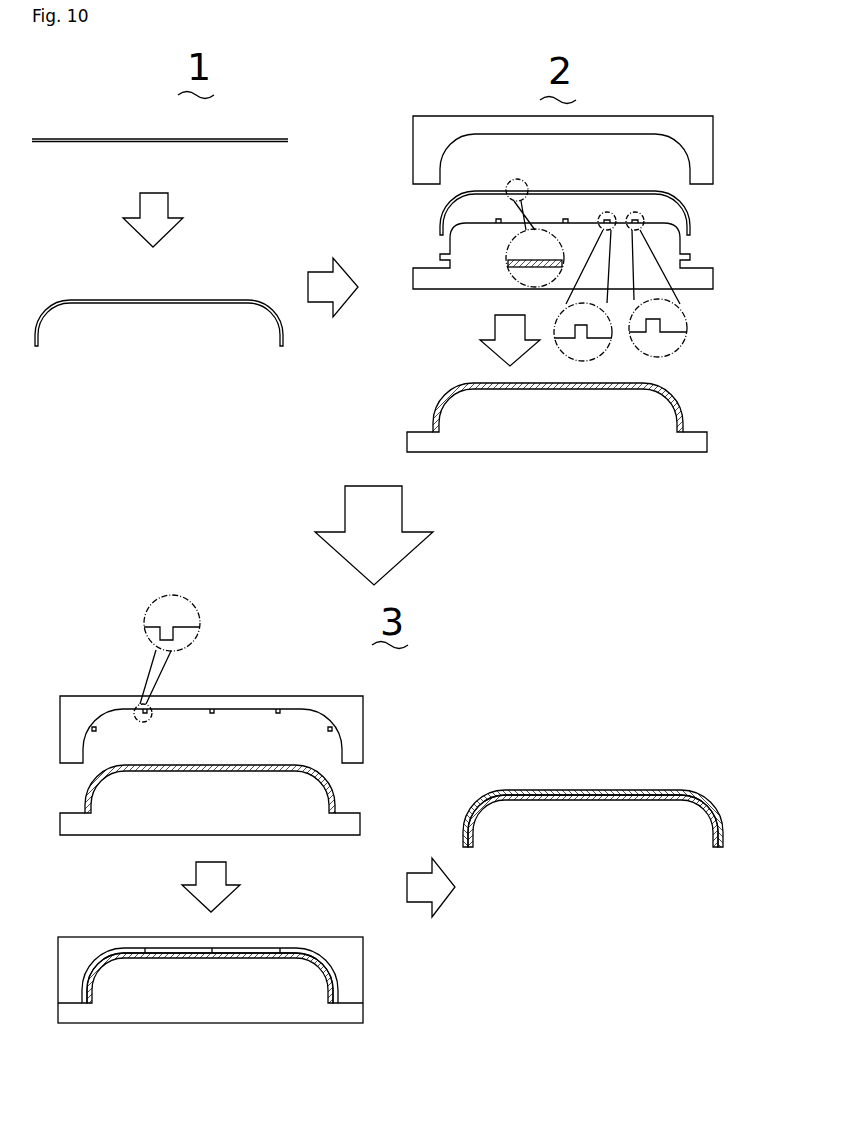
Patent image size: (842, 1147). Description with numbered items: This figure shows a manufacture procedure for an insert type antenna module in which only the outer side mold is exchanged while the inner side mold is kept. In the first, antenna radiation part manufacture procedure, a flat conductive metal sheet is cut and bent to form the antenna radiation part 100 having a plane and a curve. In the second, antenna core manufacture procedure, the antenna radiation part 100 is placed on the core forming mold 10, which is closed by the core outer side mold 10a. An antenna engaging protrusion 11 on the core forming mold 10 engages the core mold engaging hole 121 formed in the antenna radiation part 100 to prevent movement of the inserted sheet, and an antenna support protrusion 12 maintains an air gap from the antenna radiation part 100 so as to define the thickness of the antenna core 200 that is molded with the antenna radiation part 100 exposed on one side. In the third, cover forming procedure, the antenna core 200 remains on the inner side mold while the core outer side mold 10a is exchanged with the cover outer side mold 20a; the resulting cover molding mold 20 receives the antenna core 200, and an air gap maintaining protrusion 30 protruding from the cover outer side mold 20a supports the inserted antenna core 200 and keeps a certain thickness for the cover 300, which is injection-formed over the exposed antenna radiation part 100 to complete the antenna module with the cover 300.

The antenna radiation part 100 is at (254, 283).
The core outer side mold 10a is at (421, 127).
The core forming mold 10 is at (411, 267).
The core mold engaging hole 121 is at (531, 262).
The antenna engaging protrusion 11 is at (577, 319).
The antenna support protrusion 12 is at (662, 318).
The antenna core 200 is at (444, 385).
The cover outer side mold 20a is at (108, 700).
The air gap maintaining protrusion 30 is at (178, 637).
The cover molding mold 20 is at (95, 925).
The cover 300 is at (511, 785).